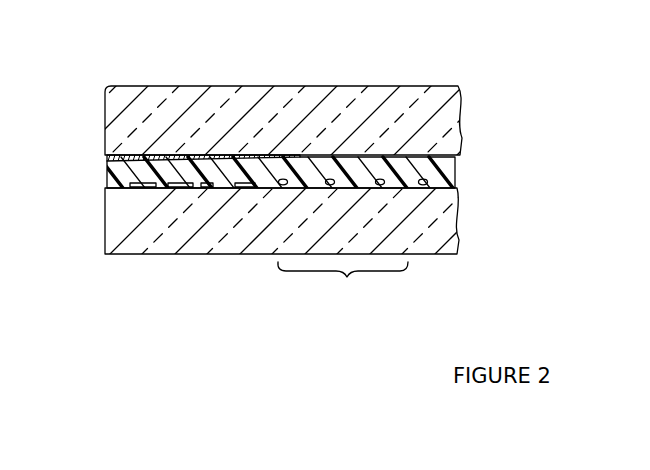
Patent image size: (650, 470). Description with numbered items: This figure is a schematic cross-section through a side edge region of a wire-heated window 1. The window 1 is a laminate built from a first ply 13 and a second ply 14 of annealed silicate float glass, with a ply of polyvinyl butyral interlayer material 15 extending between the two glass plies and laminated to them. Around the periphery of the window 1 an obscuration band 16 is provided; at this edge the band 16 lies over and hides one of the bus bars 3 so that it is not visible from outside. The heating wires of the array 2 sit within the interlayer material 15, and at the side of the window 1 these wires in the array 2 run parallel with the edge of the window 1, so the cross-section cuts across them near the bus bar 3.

The window 1 is at (286, 156).
The array 2 is at (343, 283).
The bus bar 3 is at (182, 188).
The first ply 13 is at (106, 104).
The second ply 14 is at (112, 225).
The interlayer material 15 is at (455, 163).
The obscuration band 16 is at (107, 158).